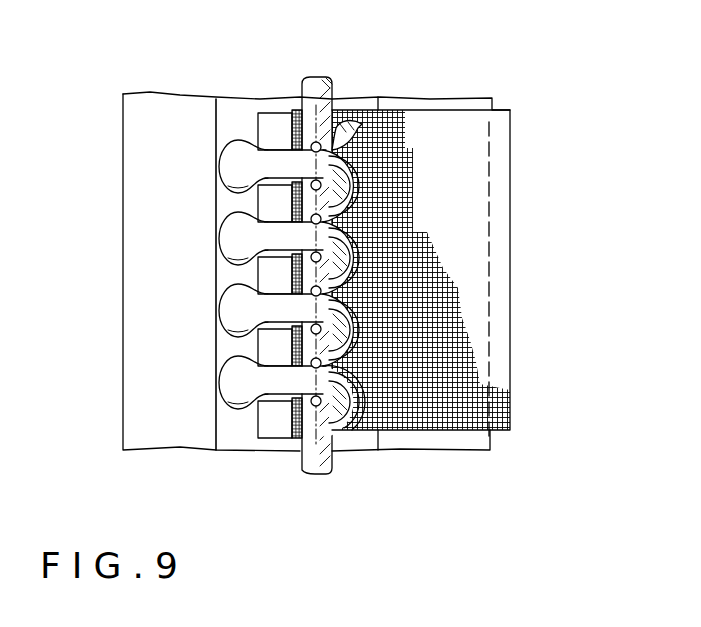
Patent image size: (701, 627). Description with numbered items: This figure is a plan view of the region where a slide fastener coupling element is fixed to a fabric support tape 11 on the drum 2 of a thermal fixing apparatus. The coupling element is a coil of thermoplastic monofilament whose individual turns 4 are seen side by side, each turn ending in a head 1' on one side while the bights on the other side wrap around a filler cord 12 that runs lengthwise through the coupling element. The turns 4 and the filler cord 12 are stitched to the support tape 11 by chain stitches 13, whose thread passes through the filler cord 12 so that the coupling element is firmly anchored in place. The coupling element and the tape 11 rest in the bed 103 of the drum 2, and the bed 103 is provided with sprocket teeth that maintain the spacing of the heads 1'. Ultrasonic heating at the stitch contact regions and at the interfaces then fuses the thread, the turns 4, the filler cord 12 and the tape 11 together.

The drum 2 is at (500, 91).
The turns of the coupling element 4 is at (270, 278).
The support tape 11 is at (500, 193).
The filler cord 12 is at (334, 89).
The chain stitches 13 is at (316, 240).
The heads 1' is at (222, 274).
The bed 103 is at (239, 425).